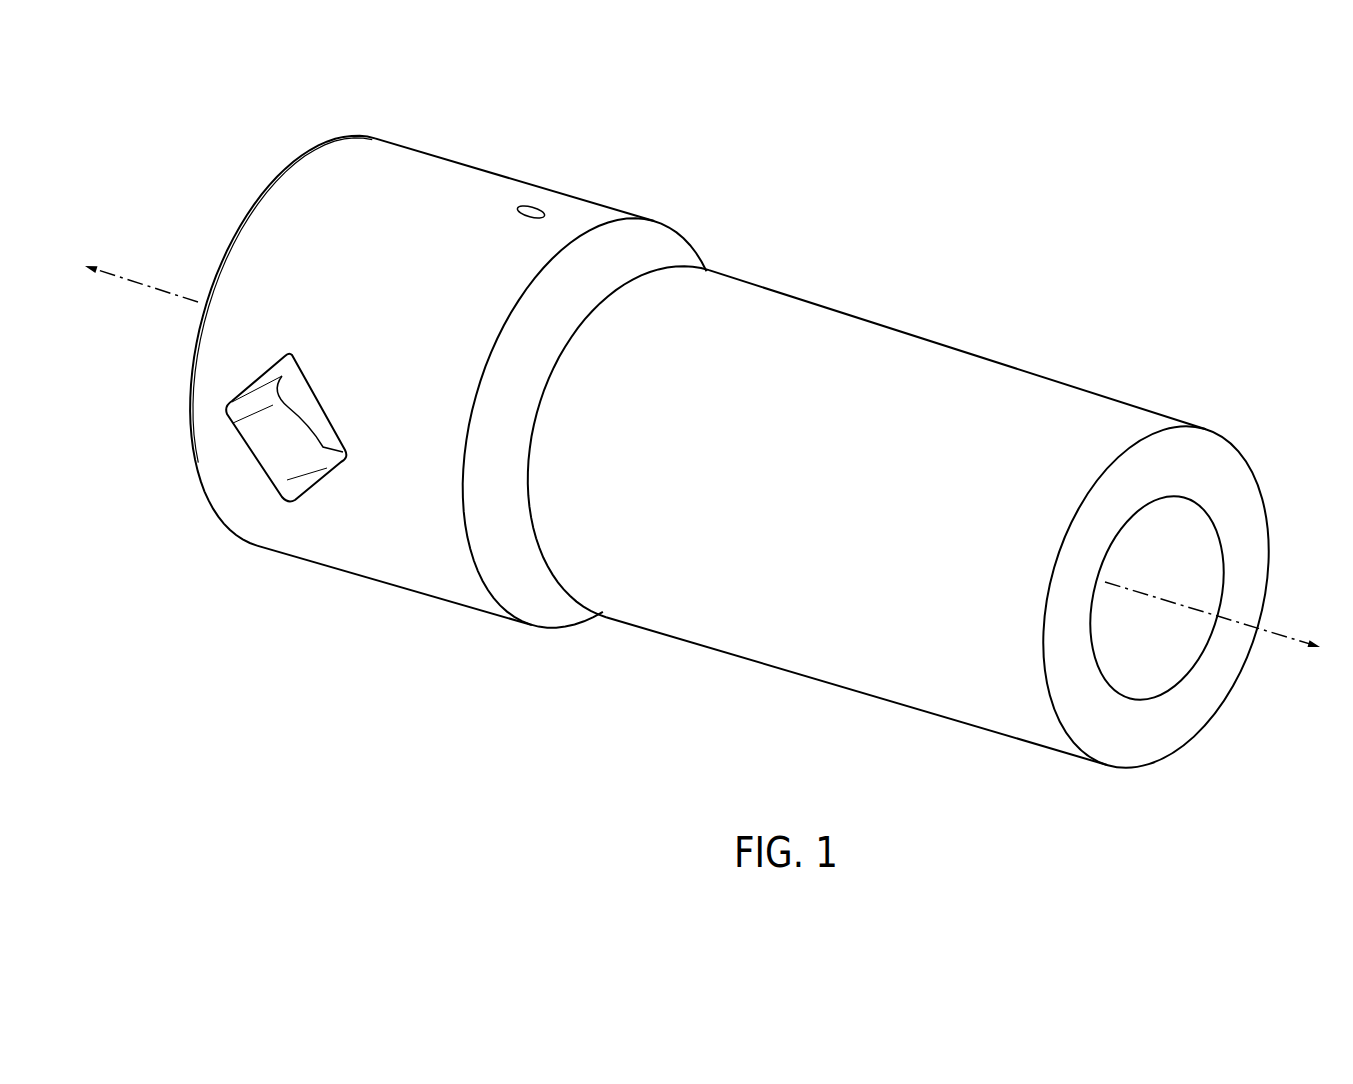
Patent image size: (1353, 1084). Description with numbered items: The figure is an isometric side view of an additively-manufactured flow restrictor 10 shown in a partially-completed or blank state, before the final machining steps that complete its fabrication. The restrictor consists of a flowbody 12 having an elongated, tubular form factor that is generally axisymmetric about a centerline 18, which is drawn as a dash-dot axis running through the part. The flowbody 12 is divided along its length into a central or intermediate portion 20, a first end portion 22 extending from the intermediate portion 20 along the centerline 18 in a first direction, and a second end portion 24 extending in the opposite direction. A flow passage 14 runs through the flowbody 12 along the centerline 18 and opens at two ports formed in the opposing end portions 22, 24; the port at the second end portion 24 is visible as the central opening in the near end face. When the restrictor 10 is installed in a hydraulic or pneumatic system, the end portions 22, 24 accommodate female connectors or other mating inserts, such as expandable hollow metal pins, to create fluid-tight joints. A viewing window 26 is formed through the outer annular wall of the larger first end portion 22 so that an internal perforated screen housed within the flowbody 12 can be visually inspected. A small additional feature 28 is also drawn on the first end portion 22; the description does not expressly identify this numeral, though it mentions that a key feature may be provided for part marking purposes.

The additively-manufactured flow restrictor 10 is at (862, 217).
The flowbody 12 is at (812, 677).
The flow passage 14 is at (1190, 512).
The centerline 18 is at (1272, 633).
The intermediate portion 20 is at (678, 452).
The first end portion 22 is at (345, 287).
The second end portion 24 is at (1003, 567).
The viewing window 26 is at (303, 393).
The aperture 28 is at (529, 208).